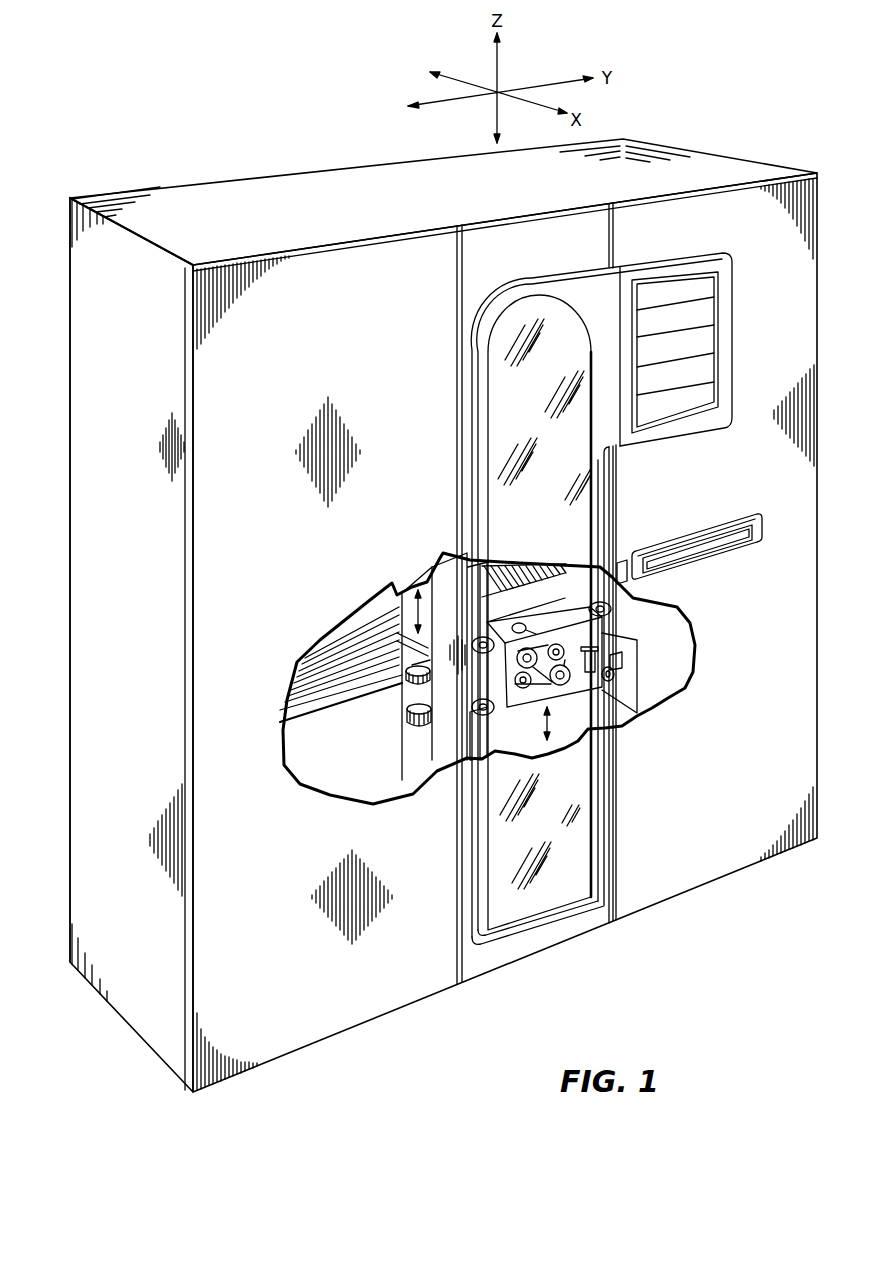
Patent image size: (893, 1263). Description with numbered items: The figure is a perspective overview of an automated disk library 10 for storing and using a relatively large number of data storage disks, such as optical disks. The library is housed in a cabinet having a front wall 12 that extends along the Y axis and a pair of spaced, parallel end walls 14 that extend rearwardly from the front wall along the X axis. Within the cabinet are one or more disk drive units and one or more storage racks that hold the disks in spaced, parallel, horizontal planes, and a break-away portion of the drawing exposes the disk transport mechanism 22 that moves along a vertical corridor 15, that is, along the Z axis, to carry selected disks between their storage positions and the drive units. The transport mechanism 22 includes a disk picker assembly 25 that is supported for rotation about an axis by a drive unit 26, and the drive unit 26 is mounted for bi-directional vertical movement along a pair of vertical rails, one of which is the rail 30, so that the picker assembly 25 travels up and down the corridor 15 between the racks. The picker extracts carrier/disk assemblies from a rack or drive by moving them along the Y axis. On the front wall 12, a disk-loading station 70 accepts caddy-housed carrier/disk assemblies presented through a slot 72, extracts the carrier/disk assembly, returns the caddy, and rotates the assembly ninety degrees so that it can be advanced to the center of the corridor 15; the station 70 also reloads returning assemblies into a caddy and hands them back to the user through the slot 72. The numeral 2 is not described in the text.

The rack 2 is at (333, 668).
The automated disk library 10 is at (703, 893).
The front wall 12 is at (749, 724).
The end walls 14 is at (101, 583).
The vertical corridor 15 is at (424, 618).
The disk transport mechanism 22 is at (612, 644).
The disk picker assembly 25 is at (428, 687).
The drive unit 26 is at (651, 684).
The vertical rail 30 is at (586, 720).
The disk-loading station 70 is at (732, 568).
The slot 72 is at (724, 541).